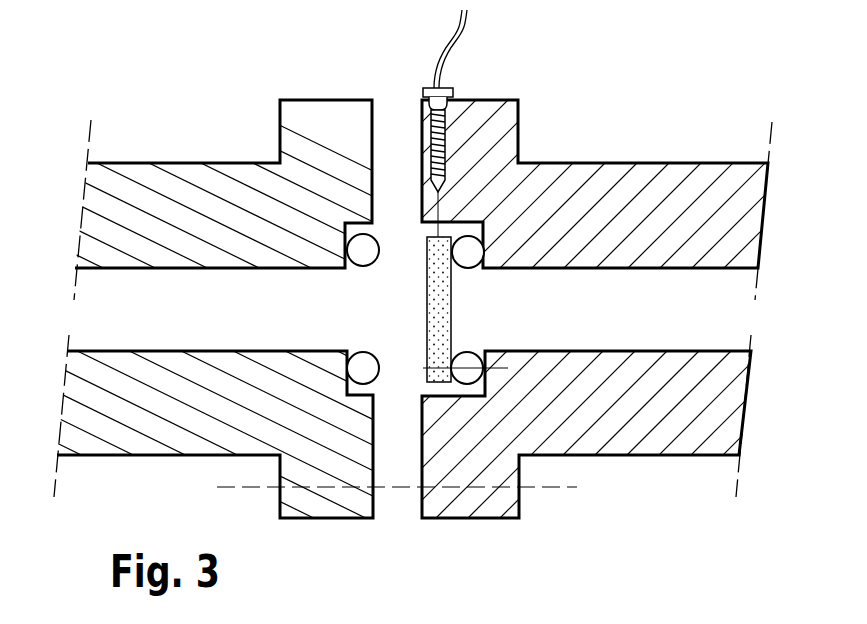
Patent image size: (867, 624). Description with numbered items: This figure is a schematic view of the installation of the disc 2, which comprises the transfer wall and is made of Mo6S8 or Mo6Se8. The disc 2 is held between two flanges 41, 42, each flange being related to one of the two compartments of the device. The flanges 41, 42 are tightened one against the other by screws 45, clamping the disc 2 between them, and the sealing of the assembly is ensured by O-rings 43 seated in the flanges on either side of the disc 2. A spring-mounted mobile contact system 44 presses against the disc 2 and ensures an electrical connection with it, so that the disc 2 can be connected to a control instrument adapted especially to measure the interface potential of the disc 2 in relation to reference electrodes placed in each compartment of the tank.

The disc 2 is at (440, 296).
The flange 41 is at (490, 133).
The flange 42 is at (293, 117).
The O-ring 43 is at (358, 353).
The spring-mounted mobile contact system 44 is at (446, 150).
The screw 45 is at (558, 487).